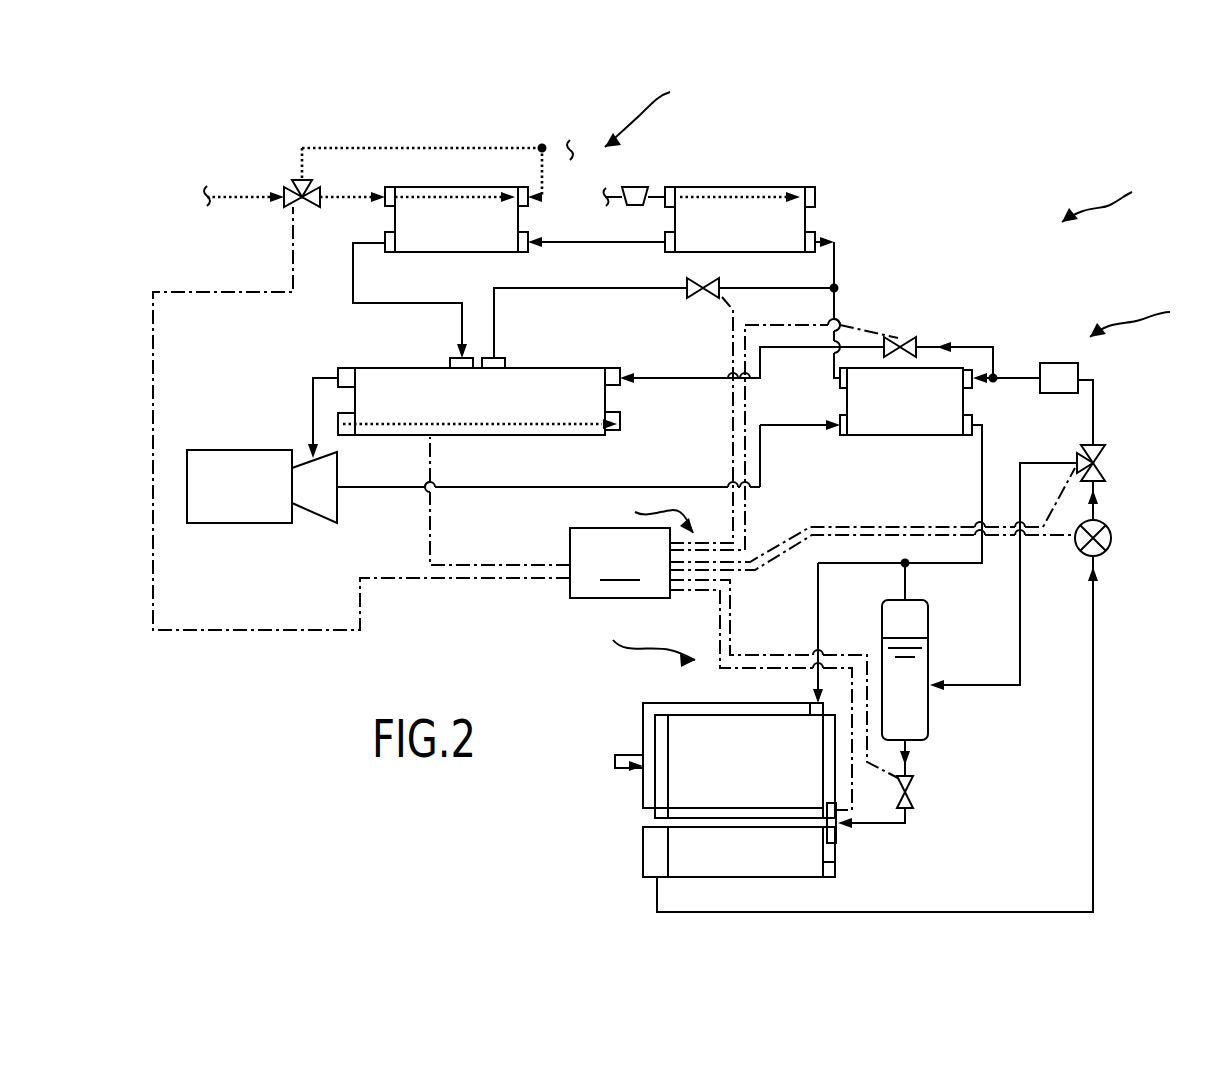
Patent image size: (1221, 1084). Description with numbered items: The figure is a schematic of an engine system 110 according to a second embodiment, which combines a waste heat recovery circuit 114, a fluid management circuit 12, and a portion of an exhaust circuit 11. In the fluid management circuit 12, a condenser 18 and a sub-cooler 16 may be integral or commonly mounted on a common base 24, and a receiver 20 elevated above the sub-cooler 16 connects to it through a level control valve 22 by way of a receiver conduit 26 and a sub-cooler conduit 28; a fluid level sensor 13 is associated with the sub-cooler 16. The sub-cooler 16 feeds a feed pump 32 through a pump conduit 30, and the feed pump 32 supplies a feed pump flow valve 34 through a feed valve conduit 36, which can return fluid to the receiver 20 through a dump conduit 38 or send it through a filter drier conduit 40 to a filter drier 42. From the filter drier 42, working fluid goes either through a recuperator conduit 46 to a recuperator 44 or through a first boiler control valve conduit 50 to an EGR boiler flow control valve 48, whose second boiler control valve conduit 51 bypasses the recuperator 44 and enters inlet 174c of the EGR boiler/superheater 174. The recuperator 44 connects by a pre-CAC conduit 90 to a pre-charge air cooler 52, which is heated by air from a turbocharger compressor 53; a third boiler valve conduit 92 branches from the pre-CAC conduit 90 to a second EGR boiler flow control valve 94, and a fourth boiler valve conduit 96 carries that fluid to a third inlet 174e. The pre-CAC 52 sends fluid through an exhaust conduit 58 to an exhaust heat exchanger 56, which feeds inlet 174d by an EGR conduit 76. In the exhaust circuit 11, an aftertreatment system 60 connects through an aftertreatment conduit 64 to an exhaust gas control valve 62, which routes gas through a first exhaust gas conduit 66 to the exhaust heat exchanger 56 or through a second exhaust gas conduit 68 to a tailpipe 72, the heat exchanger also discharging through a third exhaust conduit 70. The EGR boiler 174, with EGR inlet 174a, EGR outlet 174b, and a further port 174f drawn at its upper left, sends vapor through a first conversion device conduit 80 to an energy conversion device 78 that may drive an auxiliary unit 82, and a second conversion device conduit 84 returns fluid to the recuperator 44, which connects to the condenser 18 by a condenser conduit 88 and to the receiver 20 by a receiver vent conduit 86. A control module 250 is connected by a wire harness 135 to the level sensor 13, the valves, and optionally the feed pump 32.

The exhaust circuit 11 is at (649, 108).
The fluid management circuit 12 is at (648, 638).
The fluid level sensor 13 is at (838, 830).
The sub-cooler 16 is at (643, 850).
The condenser 18 is at (643, 728).
The receiver 20 is at (928, 718).
The level control valve 22 is at (913, 790).
The common base 24 is at (836, 862).
The receiver conduit 26 is at (907, 748).
The sub-cooler conduit 28 is at (905, 825).
The pump conduit 30 is at (1095, 720).
The feed pump 32 is at (1112, 538).
The feed pump flow valve 34 is at (1088, 443).
The feed valve conduit 36 is at (1096, 512).
The dump conduit 38 is at (1022, 600).
The filter drier conduit 40 is at (1095, 400).
The filter drier 42 is at (1048, 363).
The recuperator 44 is at (915, 437).
The recuperator conduit 46 is at (1013, 378).
The EGR boiler flow control valve 48 is at (900, 338).
The first boiler control valve conduit 50 is at (973, 346).
The second boiler control valve conduit 51 is at (762, 355).
The pre-charge air cooler (pre-CAC) 52 is at (770, 187).
The turbocharger compressor 53 is at (640, 185).
The exhaust heat exchanger 56 is at (432, 253).
The exhaust conduit 58 is at (590, 240).
The aftertreatment system 60 is at (200, 200).
The exhaust gas control valve 62 is at (300, 182).
The aftertreatment conduit 64 is at (240, 200).
The first exhaust gas conduit 66 is at (340, 196).
The second exhaust gas conduit 68 is at (437, 146).
The third exhaust conduit 70 is at (540, 168).
The tailpipe or exhaust pipe 72 is at (570, 150).
The EGR conduit 76 is at (353, 272).
The energy conversion device 78 is at (320, 523).
The first conversion device conduit 80 is at (313, 382).
The auxiliary unit 82 is at (222, 523).
The second conversion device conduit 84 is at (498, 490).
The receiver vent conduit 86 is at (907, 565).
The condenser conduit 88 is at (818, 603).
The pre-CAC conduit 90 is at (836, 312).
The third boiler valve conduit 92 is at (800, 288).
The second EGR boiler flow control valve 94 is at (718, 296).
The fourth boiler valve conduit 96 is at (598, 290).
The engine system 110 is at (1115, 197).
The waste heat recovery circuit 114 is at (1148, 316).
The wire harness 135 is at (645, 514).
The EGR boiler/superheater 174 is at (555, 437).
The EGR inlet 174a is at (343, 416).
The EGR outlet 174b is at (620, 430).
The inlet 174c is at (620, 382).
The inlet 174d is at (455, 358).
The inlet 174e is at (500, 356).
The EGR boiler port 174f is at (340, 372).
The control module 250 is at (620, 563).